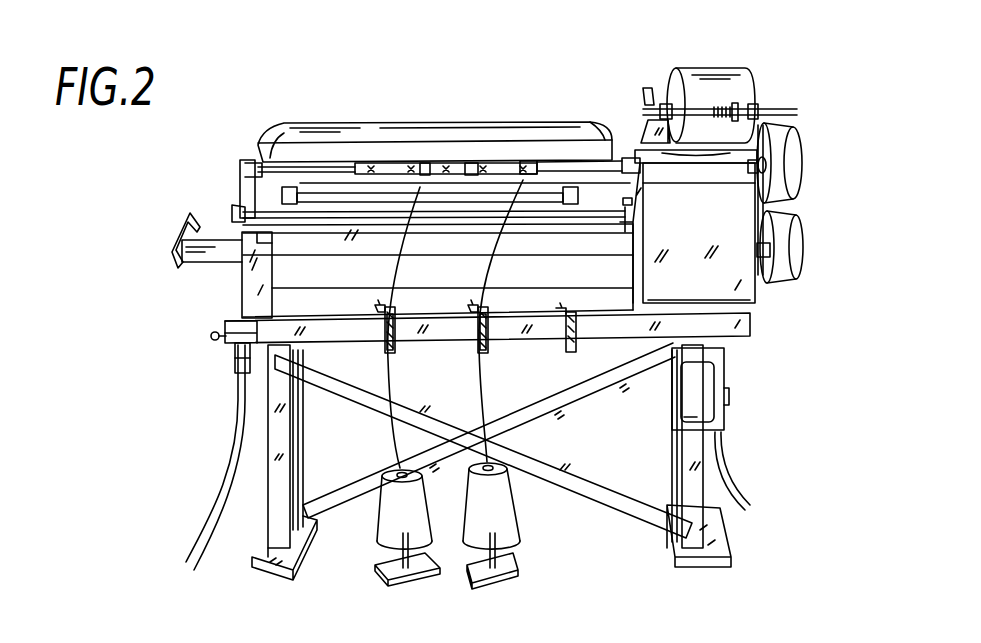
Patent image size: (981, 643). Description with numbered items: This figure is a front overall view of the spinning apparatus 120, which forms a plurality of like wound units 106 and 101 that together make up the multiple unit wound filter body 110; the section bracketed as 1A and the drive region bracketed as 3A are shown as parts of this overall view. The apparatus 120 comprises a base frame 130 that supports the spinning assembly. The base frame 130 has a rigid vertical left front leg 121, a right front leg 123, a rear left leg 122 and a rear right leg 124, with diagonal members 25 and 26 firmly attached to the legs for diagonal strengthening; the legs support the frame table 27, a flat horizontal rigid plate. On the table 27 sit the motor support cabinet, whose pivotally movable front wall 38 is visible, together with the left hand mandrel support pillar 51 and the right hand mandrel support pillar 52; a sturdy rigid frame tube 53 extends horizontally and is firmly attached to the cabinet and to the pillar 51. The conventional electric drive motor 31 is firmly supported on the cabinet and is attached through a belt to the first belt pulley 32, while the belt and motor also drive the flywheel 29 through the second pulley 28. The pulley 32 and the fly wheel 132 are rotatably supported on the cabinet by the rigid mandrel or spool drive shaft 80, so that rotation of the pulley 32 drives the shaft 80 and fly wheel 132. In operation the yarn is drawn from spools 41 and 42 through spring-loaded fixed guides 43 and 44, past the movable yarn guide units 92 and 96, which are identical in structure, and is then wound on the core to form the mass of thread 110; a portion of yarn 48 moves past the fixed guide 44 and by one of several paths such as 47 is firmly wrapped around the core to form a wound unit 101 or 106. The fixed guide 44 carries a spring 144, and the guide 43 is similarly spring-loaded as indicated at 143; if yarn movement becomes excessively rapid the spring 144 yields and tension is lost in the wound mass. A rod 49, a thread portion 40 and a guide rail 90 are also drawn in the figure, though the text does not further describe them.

The spinning apparatus 120 is at (805, 48).
The multiple unit wound filter body 110 is at (475, 95).
The detail section 1A is at (590, 100).
The spool drive shaft 80 is at (347, 167).
The movable yarn guide unit 96 is at (403, 173).
The wound unit 106 is at (423, 163).
The wound unit 101 is at (472, 163).
The movable yarn guide unit 92 is at (523, 180).
The thread guide rail 90 is at (533, 167).
The rod 49 is at (540, 193).
The left hand mandrel support pillar 51 is at (250, 298).
The frame tube 53 is at (230, 250).
The frame table 27 is at (743, 333).
The spring-loaded fixed guide 43 is at (397, 310).
The clamp insert 143 is at (387, 343).
The spring-loaded fixed guide 44 is at (484, 310).
The spring 144 is at (480, 343).
The left front leg 121 is at (280, 433).
The rear left leg 122 is at (307, 468).
The rear right leg 124 is at (693, 510).
The right front leg 123 is at (672, 470).
The diagonal member 25 is at (597, 463).
The diagonal member 26 is at (538, 408).
The thread 40 is at (393, 442).
The yarn path 47 is at (485, 275).
The yarn portion 48 is at (480, 392).
The spool 41 is at (412, 584).
The spool 42 is at (503, 582).
The base frame 130 is at (195, 350).
The right hand mandrel support pillar 52 is at (633, 272).
The front wall 38 is at (743, 293).
The electric drive motor 31 is at (740, 87).
The fly wheel 132 is at (790, 167).
The first belt pulley 32 is at (770, 157).
The flywheel 29 is at (797, 257).
The second pulley 28 is at (770, 245).
The drive section 3A is at (835, 183).